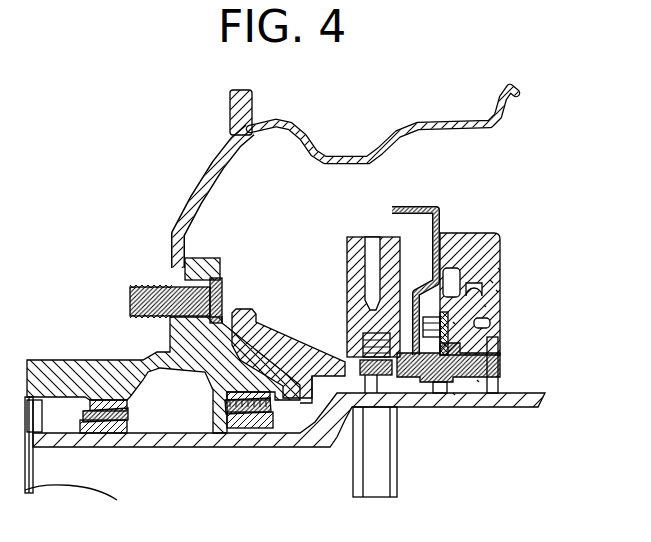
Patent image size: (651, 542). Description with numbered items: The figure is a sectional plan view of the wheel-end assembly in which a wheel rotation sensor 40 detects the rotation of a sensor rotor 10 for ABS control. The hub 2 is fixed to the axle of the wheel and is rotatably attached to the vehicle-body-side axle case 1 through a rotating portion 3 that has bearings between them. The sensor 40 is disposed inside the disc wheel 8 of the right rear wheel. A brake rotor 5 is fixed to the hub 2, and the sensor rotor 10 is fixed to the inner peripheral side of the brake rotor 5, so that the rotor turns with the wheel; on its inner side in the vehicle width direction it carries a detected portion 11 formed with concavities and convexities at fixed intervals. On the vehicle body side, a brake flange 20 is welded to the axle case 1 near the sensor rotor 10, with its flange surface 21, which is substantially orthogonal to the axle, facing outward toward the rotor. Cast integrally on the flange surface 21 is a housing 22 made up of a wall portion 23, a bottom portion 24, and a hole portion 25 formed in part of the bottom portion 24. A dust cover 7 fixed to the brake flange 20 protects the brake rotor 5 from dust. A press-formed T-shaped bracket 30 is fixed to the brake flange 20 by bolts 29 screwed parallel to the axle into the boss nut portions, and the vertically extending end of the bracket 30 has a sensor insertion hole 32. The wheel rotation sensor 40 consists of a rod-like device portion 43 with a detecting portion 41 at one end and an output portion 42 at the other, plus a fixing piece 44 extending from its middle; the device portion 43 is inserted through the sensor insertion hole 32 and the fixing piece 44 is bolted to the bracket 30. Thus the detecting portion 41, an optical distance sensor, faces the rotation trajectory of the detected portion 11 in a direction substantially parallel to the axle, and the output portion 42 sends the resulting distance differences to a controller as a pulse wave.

The axle case 1 is at (537, 395).
The hub 2 is at (50, 360).
The rotating portion 3 is at (115, 423).
The brake rotor 5 is at (357, 262).
The dust cover 7 is at (408, 206).
The disc wheel 8 is at (195, 217).
The sensor rotor 10 is at (343, 372).
The detected portion 11 is at (385, 390).
The brake flange 20 is at (453, 238).
The flange surface 21 is at (493, 280).
The housing 22 is at (496, 290).
The wall portion 23 is at (498, 268).
The bottom portion 24 is at (453, 322).
The hole portion 25 is at (498, 352).
The bolt 29 is at (413, 327).
The bracket 30 is at (484, 305).
The sensor insertion hole 32 is at (449, 333).
The wheel rotation sensor 40 is at (477, 380).
The detecting portion 41 is at (358, 348).
The output portion 42 is at (505, 368).
The device portion 43 is at (453, 393).
The fixing piece 44 is at (460, 279).